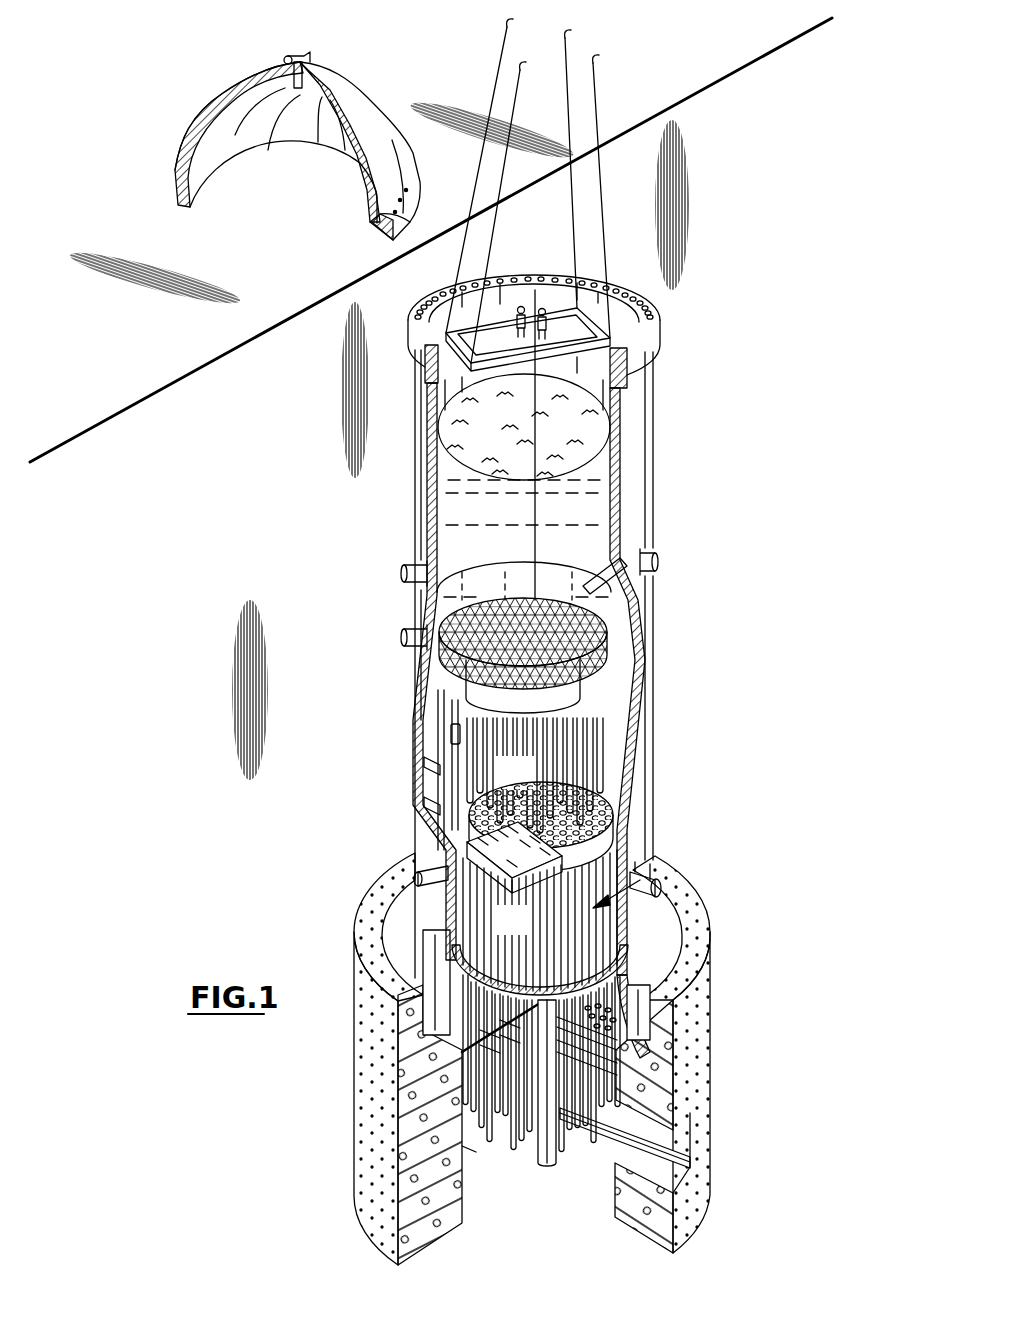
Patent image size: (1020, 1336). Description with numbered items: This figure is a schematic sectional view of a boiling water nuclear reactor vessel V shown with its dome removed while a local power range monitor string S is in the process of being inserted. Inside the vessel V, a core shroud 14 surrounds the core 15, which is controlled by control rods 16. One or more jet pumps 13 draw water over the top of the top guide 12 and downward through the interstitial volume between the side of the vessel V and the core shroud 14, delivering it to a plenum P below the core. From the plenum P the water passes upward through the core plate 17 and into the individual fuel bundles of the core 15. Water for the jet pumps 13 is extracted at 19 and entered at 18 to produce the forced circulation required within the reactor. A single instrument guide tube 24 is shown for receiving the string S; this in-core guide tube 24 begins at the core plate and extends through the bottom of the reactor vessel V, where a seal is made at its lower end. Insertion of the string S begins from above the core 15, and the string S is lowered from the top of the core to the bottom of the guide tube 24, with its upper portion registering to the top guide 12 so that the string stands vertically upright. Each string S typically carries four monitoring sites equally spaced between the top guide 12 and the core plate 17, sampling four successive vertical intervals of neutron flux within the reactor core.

The top guide 12 is at (612, 622).
The jet pumps 13 is at (450, 773).
The core shroud 14 is at (514, 522).
The core 15 is at (528, 784).
The control rods 16 is at (522, 931).
The core plate 17 is at (613, 828).
The jet pump water entry 18 is at (398, 888).
The jet pump water extraction 19 is at (680, 912).
The in-core guide tube 24 is at (541, 1152).
The local power range monitor string S is at (540, 432).
The reactor vessel V is at (650, 770).
The plenum P is at (652, 877).